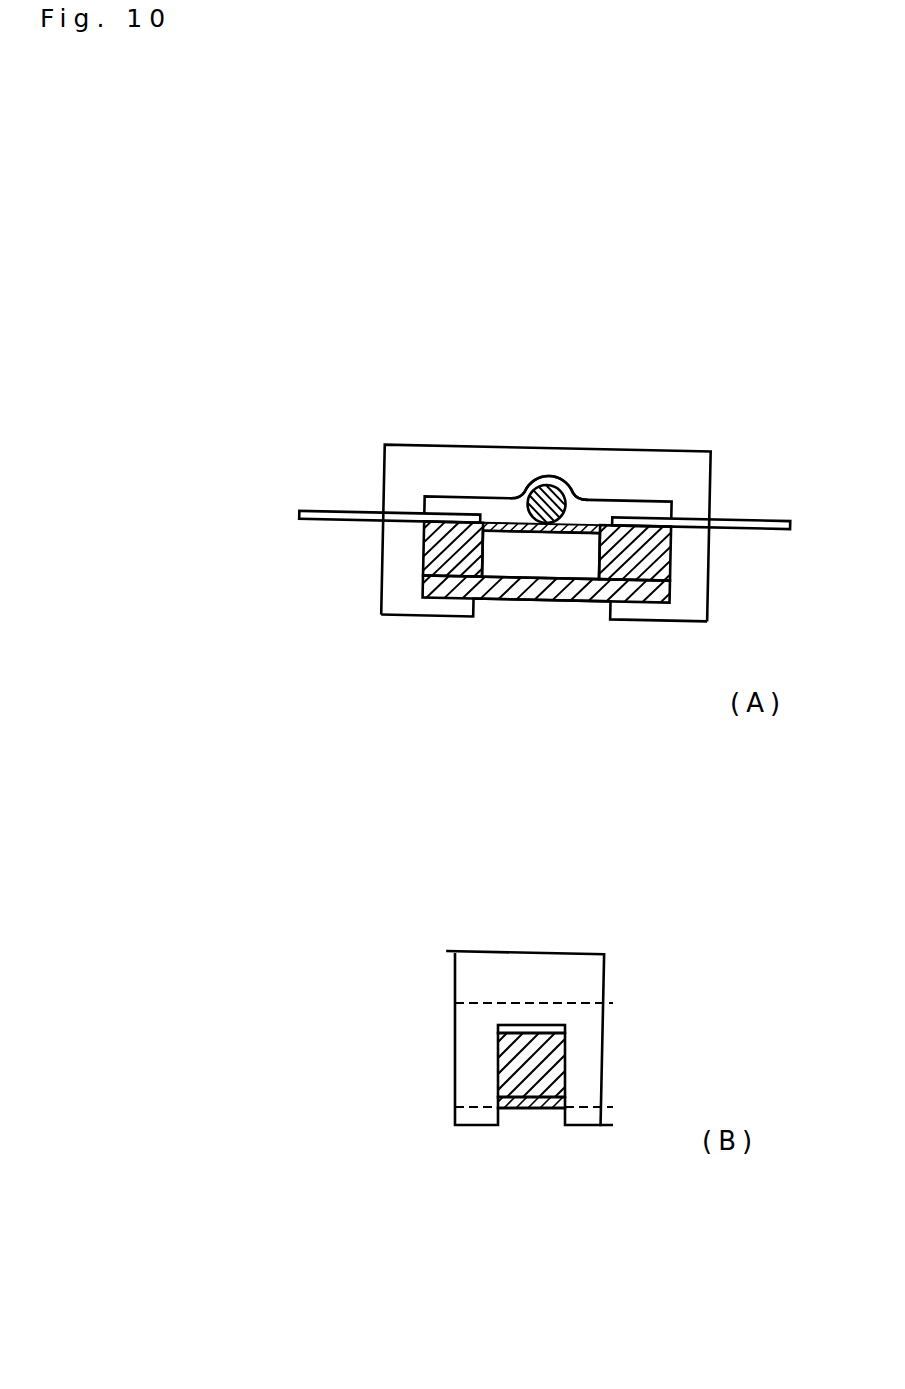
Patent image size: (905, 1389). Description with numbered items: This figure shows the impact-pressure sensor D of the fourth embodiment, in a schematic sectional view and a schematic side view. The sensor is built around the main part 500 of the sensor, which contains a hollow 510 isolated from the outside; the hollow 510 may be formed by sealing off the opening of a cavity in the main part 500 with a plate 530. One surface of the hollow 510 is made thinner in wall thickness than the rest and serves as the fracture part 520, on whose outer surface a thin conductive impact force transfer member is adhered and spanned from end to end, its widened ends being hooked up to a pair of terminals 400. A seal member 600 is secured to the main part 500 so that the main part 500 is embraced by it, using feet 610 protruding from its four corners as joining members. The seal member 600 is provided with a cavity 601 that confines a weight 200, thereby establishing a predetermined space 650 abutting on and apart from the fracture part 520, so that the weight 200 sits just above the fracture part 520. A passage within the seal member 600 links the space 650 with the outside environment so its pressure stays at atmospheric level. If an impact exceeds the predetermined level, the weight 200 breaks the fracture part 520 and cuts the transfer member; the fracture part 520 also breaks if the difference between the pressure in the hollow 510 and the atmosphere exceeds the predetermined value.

The weight 200 is at (557, 486).
The terminal 400 is at (323, 512).
The main part of the sensor 500 is at (660, 554).
The hollow 510 is at (518, 562).
The fracture part 520 is at (500, 521).
The plate 530 is at (570, 592).
The seal member 600 is at (702, 477).
The cavity 601 is at (527, 483).
The feet 610 is at (390, 582).
The space 650 is at (608, 507).
The impact-pressure sensor D is at (704, 426).